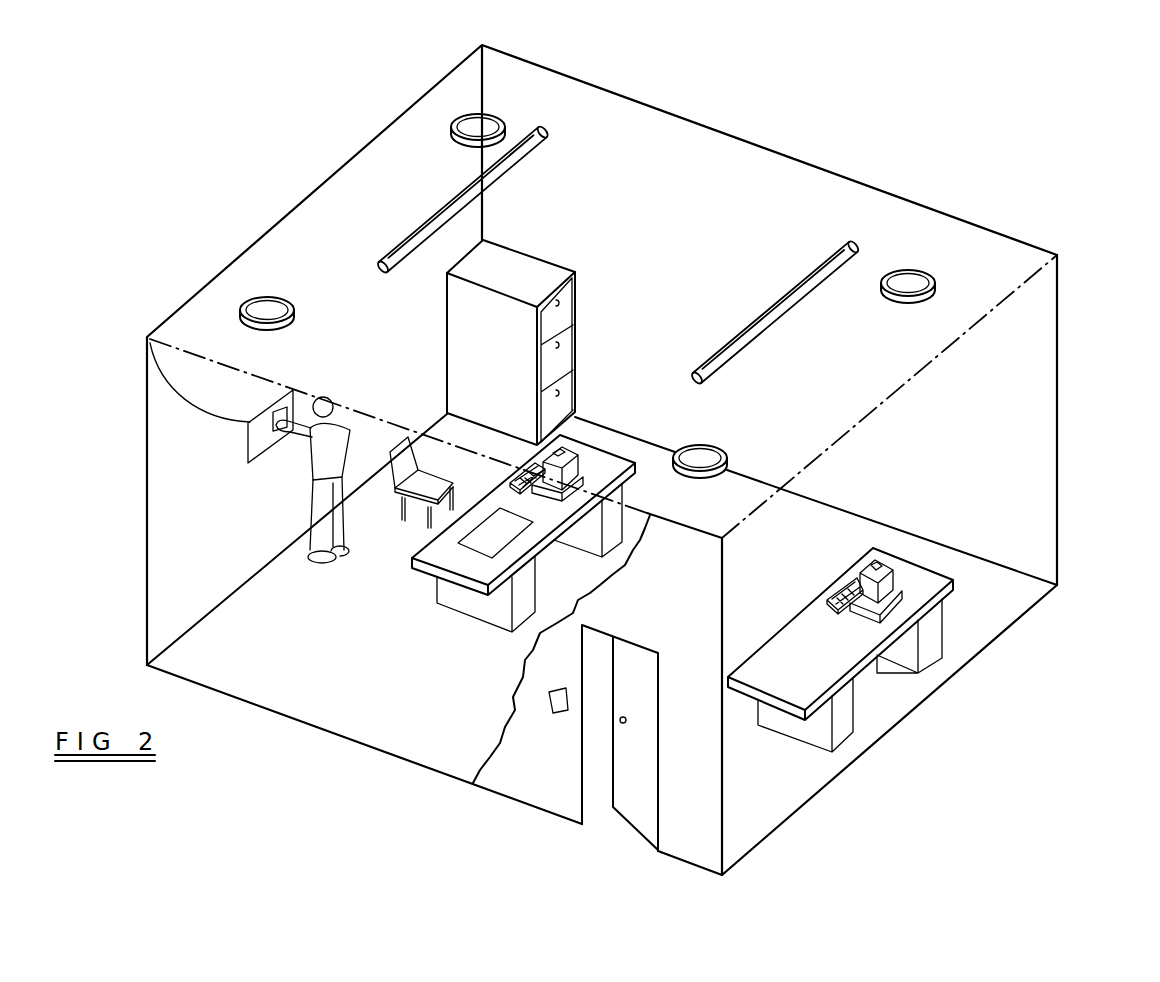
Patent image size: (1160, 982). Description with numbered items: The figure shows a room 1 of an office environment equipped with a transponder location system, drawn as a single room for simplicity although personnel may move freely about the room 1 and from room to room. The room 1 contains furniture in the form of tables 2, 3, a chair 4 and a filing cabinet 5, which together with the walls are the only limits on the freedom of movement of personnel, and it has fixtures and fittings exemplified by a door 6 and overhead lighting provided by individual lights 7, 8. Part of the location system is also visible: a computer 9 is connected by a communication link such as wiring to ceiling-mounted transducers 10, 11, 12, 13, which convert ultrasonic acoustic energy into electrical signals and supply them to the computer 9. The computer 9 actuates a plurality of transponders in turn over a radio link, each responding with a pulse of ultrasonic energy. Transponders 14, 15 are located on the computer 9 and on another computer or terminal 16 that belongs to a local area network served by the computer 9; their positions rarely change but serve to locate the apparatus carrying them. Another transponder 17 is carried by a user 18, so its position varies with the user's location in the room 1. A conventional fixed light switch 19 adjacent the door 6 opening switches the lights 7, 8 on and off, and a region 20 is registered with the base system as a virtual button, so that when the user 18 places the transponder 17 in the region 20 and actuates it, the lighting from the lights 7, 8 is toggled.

The room 1 is at (1060, 330).
The table 2 is at (425, 570).
The table 3 is at (787, 703).
The chair 4 is at (385, 480).
The filing cabinet 5 is at (572, 302).
The door 6 is at (637, 795).
The light 7 is at (528, 143).
The light 8 is at (790, 283).
The computer 9 is at (893, 582).
The ceiling-mounted transducer 10 is at (255, 308).
The ceiling-mounted transducer 11 is at (472, 122).
The ceiling-mounted transducer 12 is at (910, 277).
The ceiling-mounted transducer 13 is at (707, 452).
The transponder 14 is at (873, 556).
The transponder 15 is at (565, 452).
The computer or terminal 16 is at (565, 468).
The transponder 17 is at (270, 421).
The user 18 is at (317, 463).
The fixed light switch 19 is at (557, 707).
The region 20 is at (147, 352).